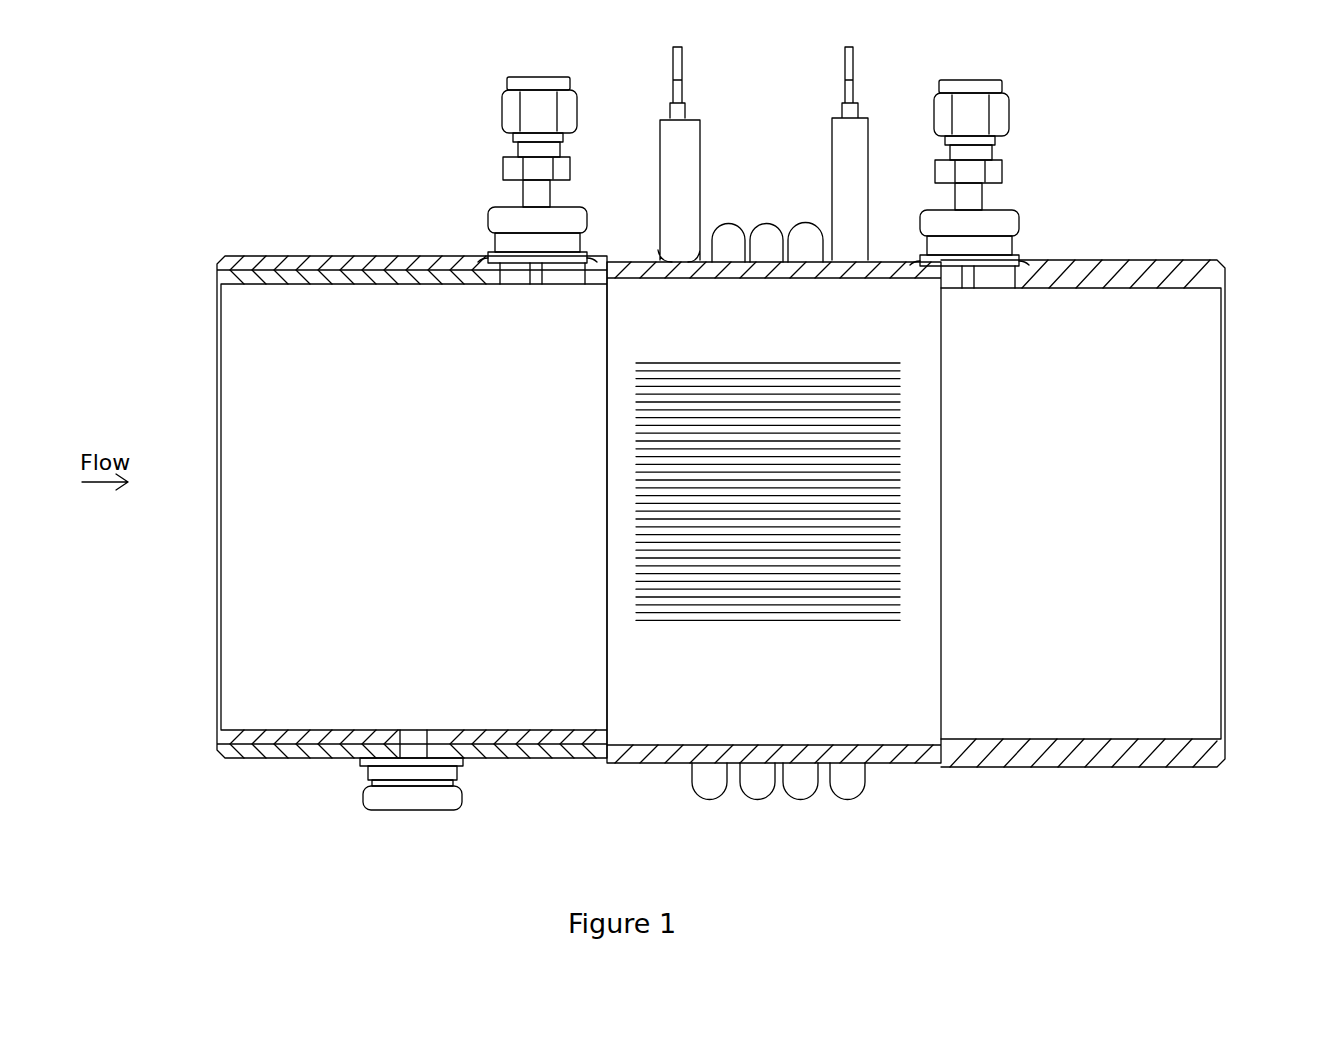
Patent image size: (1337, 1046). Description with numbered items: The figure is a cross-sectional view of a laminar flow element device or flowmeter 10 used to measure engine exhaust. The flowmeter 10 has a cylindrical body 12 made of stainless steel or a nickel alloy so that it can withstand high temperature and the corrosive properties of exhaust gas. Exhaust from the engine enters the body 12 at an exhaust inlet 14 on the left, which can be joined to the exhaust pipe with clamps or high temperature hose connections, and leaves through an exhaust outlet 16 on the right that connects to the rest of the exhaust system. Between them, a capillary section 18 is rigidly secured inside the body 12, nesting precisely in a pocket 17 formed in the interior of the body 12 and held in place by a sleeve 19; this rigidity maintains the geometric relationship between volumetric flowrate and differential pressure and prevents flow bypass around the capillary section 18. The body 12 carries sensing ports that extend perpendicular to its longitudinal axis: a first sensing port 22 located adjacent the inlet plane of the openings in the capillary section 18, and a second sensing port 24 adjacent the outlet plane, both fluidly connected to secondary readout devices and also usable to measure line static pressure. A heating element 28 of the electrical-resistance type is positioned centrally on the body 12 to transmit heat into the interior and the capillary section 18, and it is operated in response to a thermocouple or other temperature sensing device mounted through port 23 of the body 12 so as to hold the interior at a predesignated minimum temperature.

The laminar flow element device 10 is at (1245, 452).
The cylindrical body 12 is at (1193, 248).
The exhaust inlet 14 is at (207, 524).
The exhaust outlet 16 is at (1233, 618).
The pocket 17 is at (907, 742).
The capillary section 18 is at (770, 628).
The sleeve 19 is at (352, 296).
The first sensing port 22 is at (537, 285).
The port 23 is at (410, 740).
The second sensing port 24 is at (972, 280).
The heating element 28 is at (770, 210).